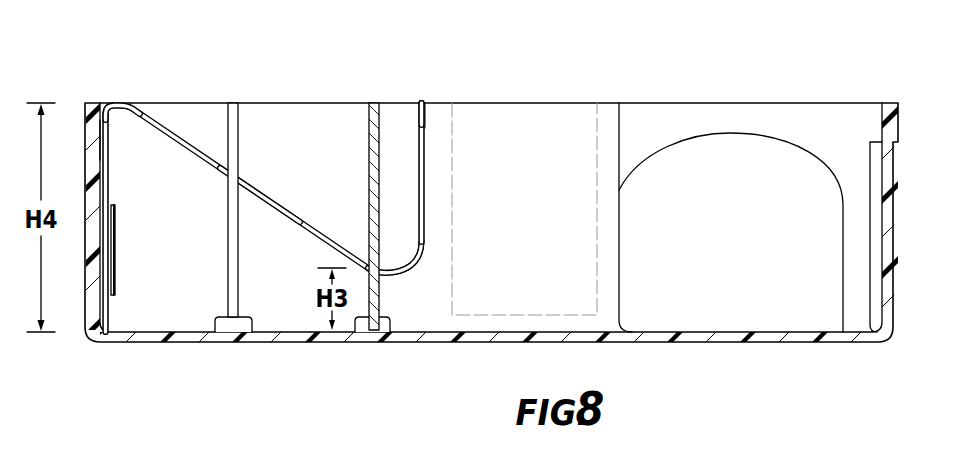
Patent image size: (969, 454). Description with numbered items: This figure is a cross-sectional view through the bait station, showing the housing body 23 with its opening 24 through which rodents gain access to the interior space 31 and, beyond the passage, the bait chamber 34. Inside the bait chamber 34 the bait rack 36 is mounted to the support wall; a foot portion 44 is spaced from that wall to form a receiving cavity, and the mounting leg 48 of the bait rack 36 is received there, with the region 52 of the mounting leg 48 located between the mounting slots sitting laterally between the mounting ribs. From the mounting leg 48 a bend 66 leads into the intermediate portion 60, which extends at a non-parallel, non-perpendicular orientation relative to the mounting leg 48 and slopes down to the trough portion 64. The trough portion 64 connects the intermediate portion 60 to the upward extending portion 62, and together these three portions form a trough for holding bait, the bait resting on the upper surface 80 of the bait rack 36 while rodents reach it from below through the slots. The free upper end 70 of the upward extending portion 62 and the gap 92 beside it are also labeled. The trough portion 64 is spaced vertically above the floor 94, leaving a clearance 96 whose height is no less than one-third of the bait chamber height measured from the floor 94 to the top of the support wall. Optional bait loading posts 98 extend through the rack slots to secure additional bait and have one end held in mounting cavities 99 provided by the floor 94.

The housing body 23 is at (522, 112).
The opening 24 is at (763, 165).
The interior space 31 is at (689, 112).
The bait chamber 34 is at (214, 118).
The bait rack 36 is at (229, 176).
The foot portion 44 is at (115, 222).
The mounting leg 48 is at (110, 142).
The region of the mounting leg 52 is at (107, 262).
The intermediate portion 60 is at (281, 180).
The upward extending portion 62 is at (420, 172).
The trough portion 64 is at (400, 267).
The bend 66 is at (118, 103).
The free end 70 is at (421, 125).
The upper surface 80 is at (257, 190).
The gap 92 is at (422, 127).
The floor 94 is at (302, 334).
The clearance 96 is at (397, 283).
The bait loading posts 98 is at (232, 250).
The mounting cavities 99 is at (361, 338).